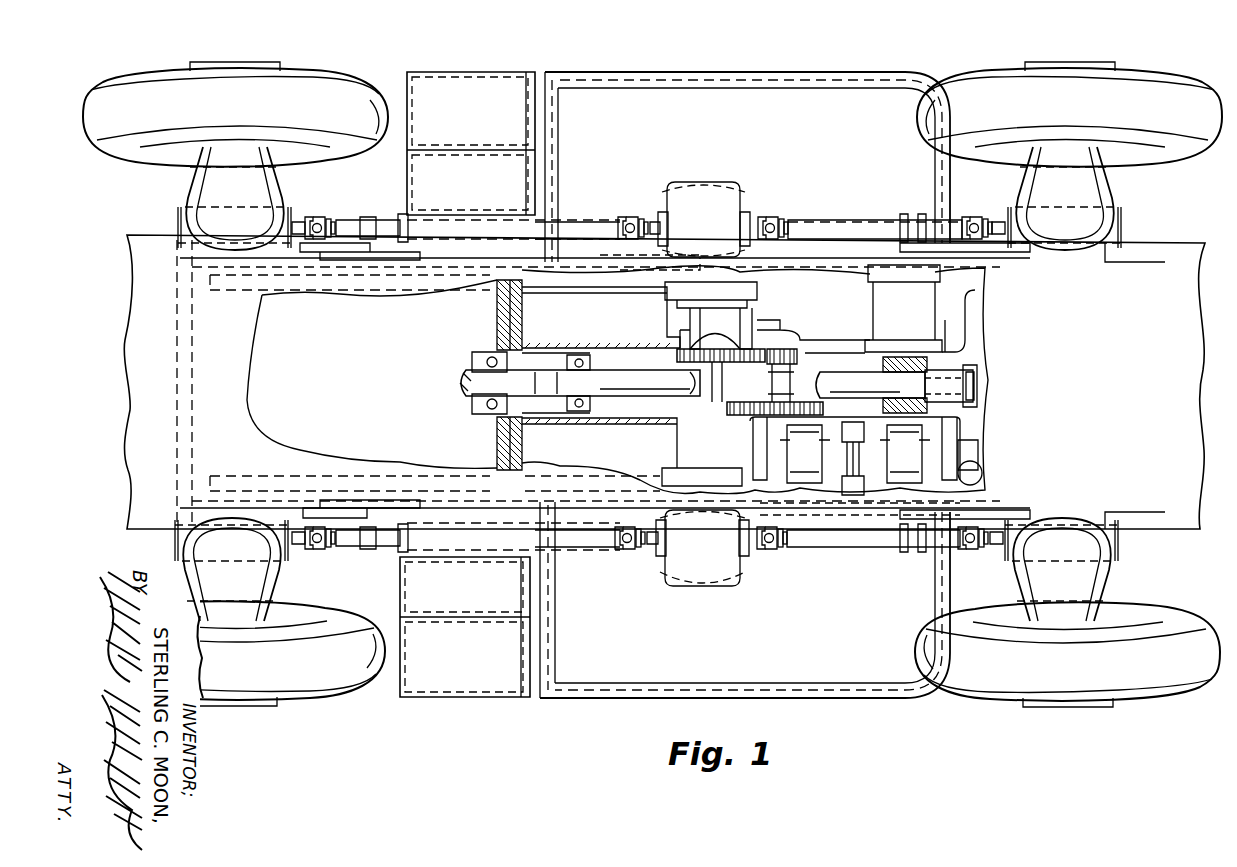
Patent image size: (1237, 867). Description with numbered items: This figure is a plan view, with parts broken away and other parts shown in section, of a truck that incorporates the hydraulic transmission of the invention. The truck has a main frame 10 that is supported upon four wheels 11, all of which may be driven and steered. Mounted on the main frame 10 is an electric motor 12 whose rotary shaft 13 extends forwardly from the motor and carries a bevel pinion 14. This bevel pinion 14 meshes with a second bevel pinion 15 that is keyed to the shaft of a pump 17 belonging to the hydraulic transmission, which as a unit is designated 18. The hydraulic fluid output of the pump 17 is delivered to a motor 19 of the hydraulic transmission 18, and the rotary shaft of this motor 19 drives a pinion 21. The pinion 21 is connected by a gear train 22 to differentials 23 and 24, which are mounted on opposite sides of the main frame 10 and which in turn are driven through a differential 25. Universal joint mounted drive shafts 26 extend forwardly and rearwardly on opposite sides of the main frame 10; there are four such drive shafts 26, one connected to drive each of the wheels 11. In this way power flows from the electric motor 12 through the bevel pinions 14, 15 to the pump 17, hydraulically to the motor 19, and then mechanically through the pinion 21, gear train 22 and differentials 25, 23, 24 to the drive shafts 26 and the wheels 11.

The main frame 10 is at (580, 549).
The wheels 11 is at (130, 97).
The electric motor 12 is at (379, 378).
The rotary shaft 13 is at (672, 394).
The bevel pinion 14 is at (927, 372).
The bevel pinion 15 is at (870, 394).
The pump 17 is at (905, 454).
The hydraulic transmission 18 is at (839, 498).
The motor 19 is at (805, 454).
The pinion 21 is at (809, 402).
The gear train 22 is at (737, 375).
The differential 23 is at (702, 548).
The differential 24 is at (704, 219).
The differential 25 is at (700, 340).
The drive shafts 26 is at (589, 222).